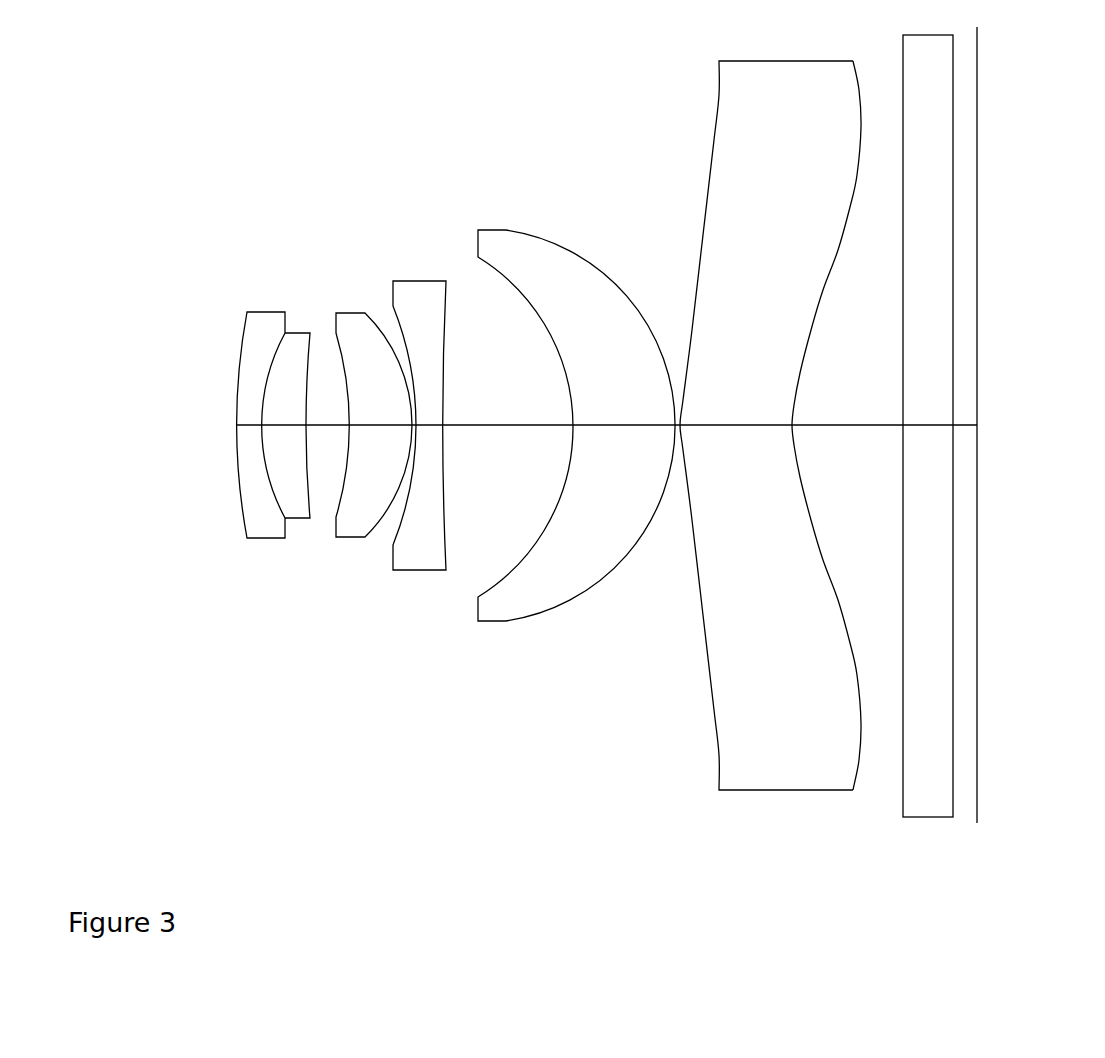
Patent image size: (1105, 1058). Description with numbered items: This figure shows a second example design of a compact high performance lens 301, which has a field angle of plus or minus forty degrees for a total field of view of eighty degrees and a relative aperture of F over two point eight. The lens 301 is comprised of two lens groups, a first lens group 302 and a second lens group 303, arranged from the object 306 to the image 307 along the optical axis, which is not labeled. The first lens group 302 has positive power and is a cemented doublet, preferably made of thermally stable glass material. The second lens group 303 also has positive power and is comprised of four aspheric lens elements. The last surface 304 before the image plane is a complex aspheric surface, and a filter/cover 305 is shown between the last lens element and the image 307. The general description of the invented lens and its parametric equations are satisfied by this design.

The lens 301 is at (488, 858).
The first lens group 302 is at (270, 343).
The second lens group 303 is at (687, 472).
The last surface 304 is at (835, 580).
The filter/cover 305 is at (930, 73).
The object 306 is at (177, 434).
The image 307 is at (981, 302).